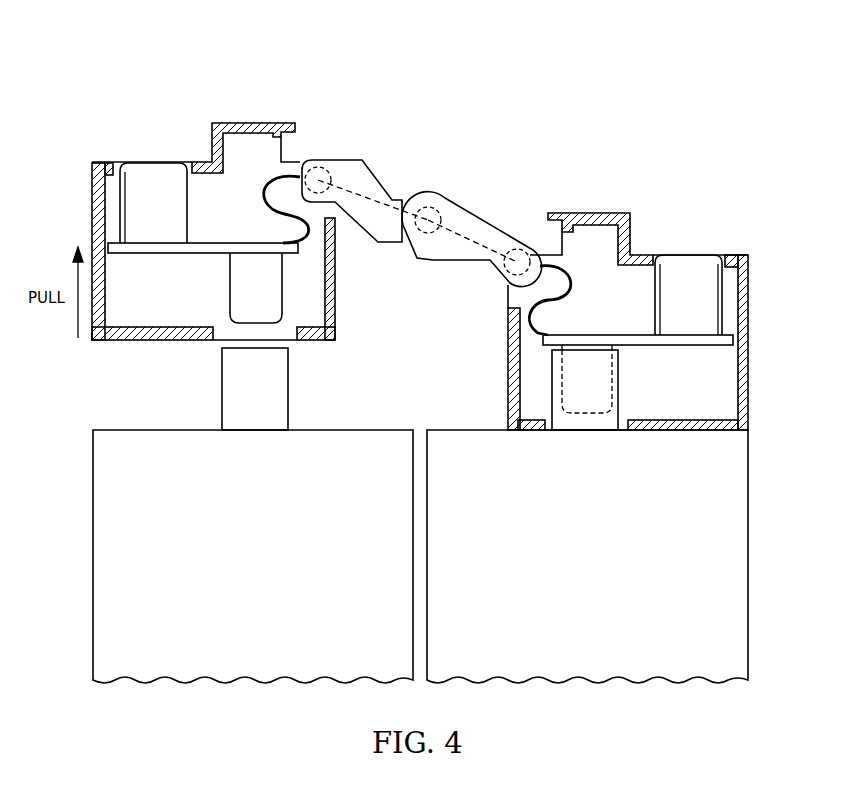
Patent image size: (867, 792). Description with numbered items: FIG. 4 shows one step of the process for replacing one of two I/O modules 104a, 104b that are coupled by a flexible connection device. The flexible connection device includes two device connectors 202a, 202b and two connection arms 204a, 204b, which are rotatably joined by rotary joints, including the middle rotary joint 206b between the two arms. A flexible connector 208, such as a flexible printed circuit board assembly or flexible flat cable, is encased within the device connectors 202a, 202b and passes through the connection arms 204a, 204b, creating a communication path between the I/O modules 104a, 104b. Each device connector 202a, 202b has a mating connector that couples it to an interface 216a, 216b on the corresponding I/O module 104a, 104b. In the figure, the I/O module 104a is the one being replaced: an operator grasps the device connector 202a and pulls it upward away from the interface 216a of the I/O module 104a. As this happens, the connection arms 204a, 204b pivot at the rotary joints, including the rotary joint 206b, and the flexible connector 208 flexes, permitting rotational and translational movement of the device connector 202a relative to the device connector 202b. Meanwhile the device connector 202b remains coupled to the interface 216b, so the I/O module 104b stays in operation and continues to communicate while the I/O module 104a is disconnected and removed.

The device connector 202a is at (243, 126).
The device connector 202b is at (607, 217).
The connection arm 204a is at (333, 160).
The connection arm 204b is at (482, 219).
The rotary joint 206b is at (423, 197).
The flexible connector 208 is at (422, 221).
The interface 216a is at (221, 389).
The interface 216b is at (621, 392).
The I/O module 104a is at (276, 593).
The I/O module 104b is at (611, 589).